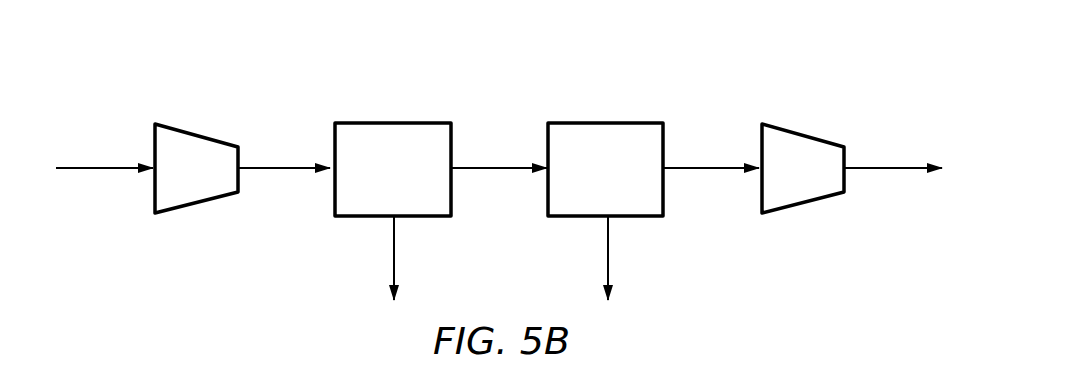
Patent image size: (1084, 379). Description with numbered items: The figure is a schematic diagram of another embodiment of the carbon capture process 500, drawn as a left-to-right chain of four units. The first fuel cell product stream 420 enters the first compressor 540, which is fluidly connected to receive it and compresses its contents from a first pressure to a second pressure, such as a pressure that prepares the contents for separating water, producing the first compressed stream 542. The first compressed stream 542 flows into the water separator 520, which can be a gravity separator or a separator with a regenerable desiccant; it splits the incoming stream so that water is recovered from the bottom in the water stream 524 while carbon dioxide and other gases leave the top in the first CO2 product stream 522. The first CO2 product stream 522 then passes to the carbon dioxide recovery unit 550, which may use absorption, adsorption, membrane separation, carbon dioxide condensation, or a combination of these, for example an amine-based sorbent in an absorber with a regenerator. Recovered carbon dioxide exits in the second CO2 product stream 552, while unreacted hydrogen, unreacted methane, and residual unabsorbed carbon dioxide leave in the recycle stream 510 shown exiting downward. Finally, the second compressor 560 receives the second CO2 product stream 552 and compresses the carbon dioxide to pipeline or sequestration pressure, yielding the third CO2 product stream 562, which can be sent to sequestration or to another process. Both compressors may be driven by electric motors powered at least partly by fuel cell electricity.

The carbon capture process 500 is at (824, 34).
The first fuel cell product stream 420 is at (100, 168).
The first compressor 540 is at (212, 180).
The first compressed stream 542 is at (280, 168).
The water separator 520 is at (409, 180).
The first CO2 product stream 522 is at (496, 168).
The water stream 524 is at (395, 253).
The carbon dioxide recovery unit 550 is at (622, 180).
The second CO2 product stream 552 is at (700, 168).
The recycle stream 510 is at (609, 253).
The second compressor 560 is at (819, 180).
The third CO2 product stream 562 is at (884, 168).